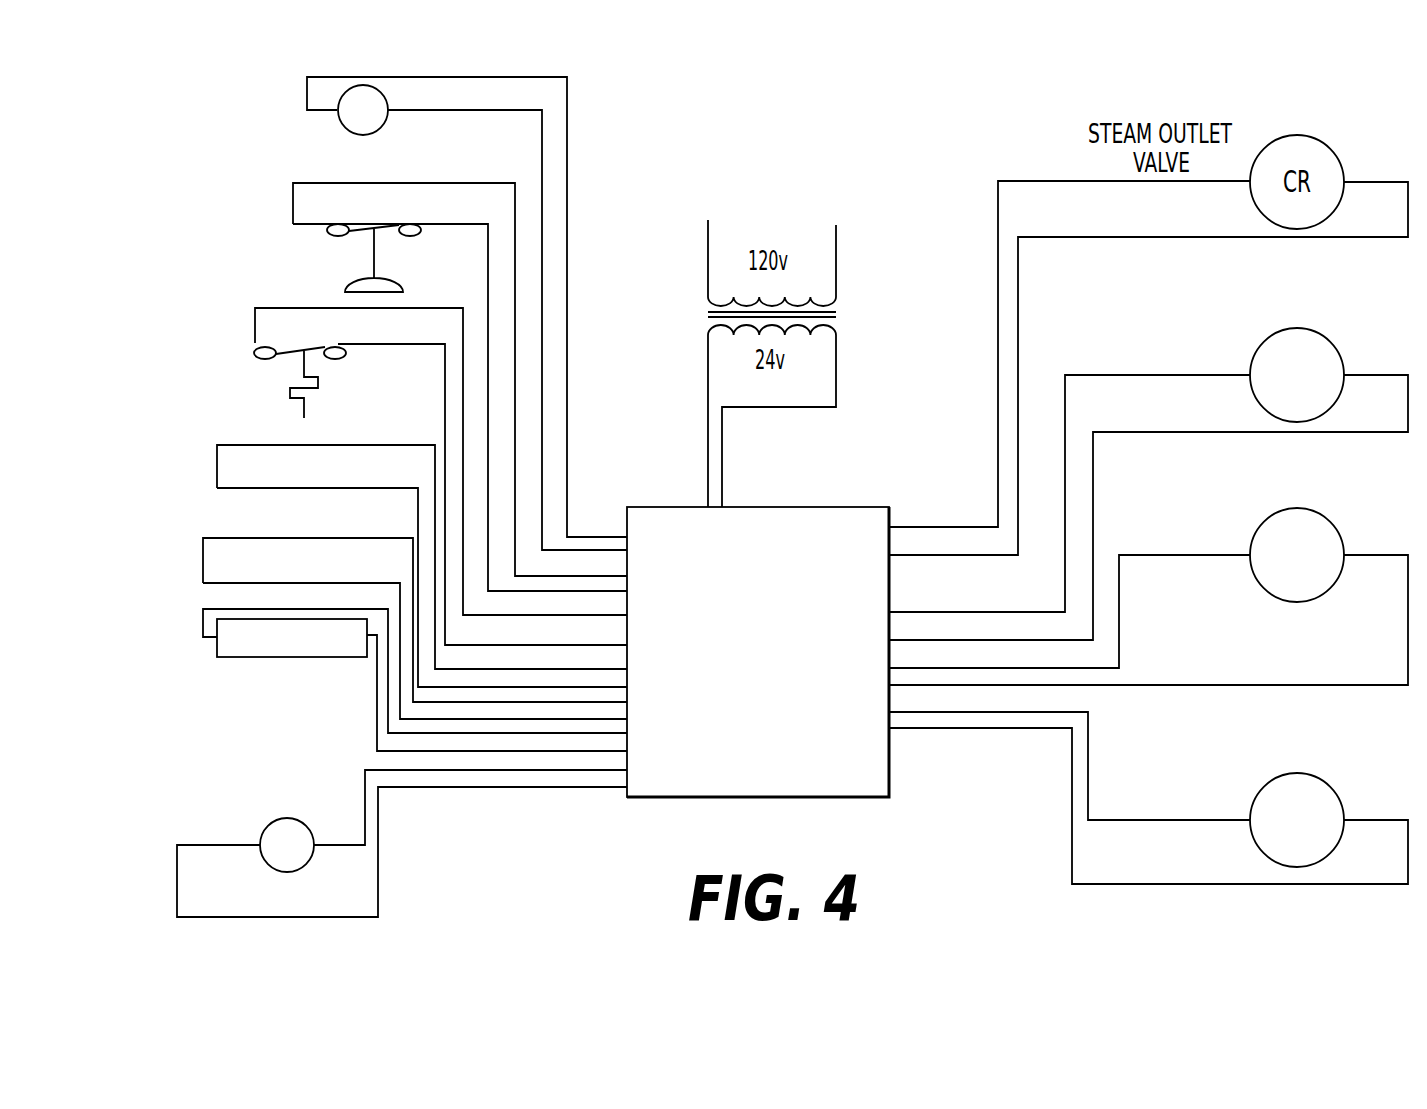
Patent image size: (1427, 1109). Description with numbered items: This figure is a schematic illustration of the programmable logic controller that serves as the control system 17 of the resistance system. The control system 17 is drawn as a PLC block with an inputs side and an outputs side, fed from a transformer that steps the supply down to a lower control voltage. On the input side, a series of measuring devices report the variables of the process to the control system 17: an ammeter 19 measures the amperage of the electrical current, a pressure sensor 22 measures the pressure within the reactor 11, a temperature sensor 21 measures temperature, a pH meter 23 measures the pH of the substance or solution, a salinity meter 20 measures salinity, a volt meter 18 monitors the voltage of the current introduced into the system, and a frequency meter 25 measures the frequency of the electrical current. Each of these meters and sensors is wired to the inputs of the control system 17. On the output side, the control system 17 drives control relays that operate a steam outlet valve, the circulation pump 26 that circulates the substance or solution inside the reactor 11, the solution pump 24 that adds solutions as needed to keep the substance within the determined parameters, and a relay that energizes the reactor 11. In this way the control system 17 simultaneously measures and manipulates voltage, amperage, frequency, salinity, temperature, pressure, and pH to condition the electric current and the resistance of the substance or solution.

The reactor 11 is at (1343, 805).
The control system 17 is at (773, 520).
The volt meter 18 is at (225, 643).
The ammeter 19 is at (346, 118).
The salinity meter 20 is at (210, 558).
The temperature sensor 21 is at (258, 327).
The pressure sensor 22 is at (300, 195).
The pH meter 23 is at (228, 463).
The solution pump 24 is at (1338, 535).
The frequency meter 25 is at (190, 857).
The circulation pump 26 is at (1338, 357).